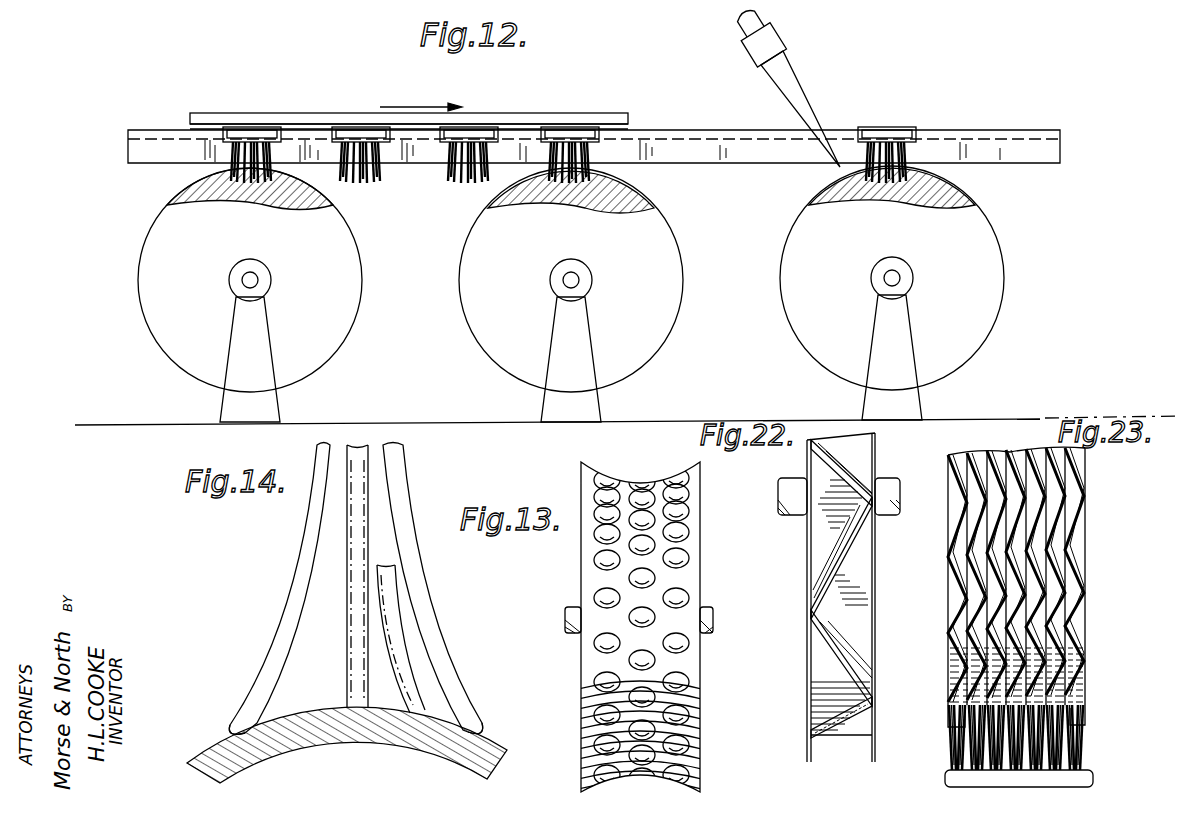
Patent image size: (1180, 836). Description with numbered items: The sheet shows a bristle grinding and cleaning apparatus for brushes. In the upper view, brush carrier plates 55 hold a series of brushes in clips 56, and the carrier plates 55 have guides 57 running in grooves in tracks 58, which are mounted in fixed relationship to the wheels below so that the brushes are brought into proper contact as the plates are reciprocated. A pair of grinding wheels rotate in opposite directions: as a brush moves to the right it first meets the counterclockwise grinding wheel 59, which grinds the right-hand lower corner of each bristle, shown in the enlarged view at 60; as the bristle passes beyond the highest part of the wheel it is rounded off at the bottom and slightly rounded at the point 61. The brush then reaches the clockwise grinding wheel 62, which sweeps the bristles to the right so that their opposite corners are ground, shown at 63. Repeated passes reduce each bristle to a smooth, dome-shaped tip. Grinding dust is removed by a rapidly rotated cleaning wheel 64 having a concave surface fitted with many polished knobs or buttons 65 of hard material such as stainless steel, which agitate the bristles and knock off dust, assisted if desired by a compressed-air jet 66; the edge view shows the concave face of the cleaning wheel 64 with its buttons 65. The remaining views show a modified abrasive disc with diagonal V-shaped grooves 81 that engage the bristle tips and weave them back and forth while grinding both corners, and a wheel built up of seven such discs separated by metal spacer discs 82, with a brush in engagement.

In FIG. 12, the brush carrier plate 55 is at (298, 118).
In FIG. 12, the clips 56 is at (600, 128).
In FIG. 12, the guides 57 is at (208, 130).
In FIG. 12, the tracks 58 is at (147, 157).
In FIG. 12, the grinding wheel 59 is at (150, 312).
In FIG. 14, the ground bristle corner 60 is at (247, 712).
In FIG. 14, the rounded bristle point 61 is at (400, 710).
In FIG. 12, the grinding wheel 62 is at (672, 267).
In FIG. 14, the ground opposite bristle corner 63 is at (470, 730).
In FIG. 12, the cleaning wheel 64 is at (987, 250).
In FIG. 13, the cleaning wheel 64 is at (682, 582).
In FIG. 12, the polished knobs or buttons 65 is at (958, 188).
In FIG. 13, the polished knobs or buttons 65 is at (678, 557).
In FIG. 12, the compressed-air jet 66 is at (817, 107).
In FIG. 22, the diagonal V-shaped grooves 81 is at (847, 550).
In FIG. 23, the diagonal V-shaped grooves 81 is at (1067, 597).
In FIG. 22, the metal spacer disc 82 is at (808, 718).
In FIG. 23, the metal spacer disc 82 is at (1047, 525).